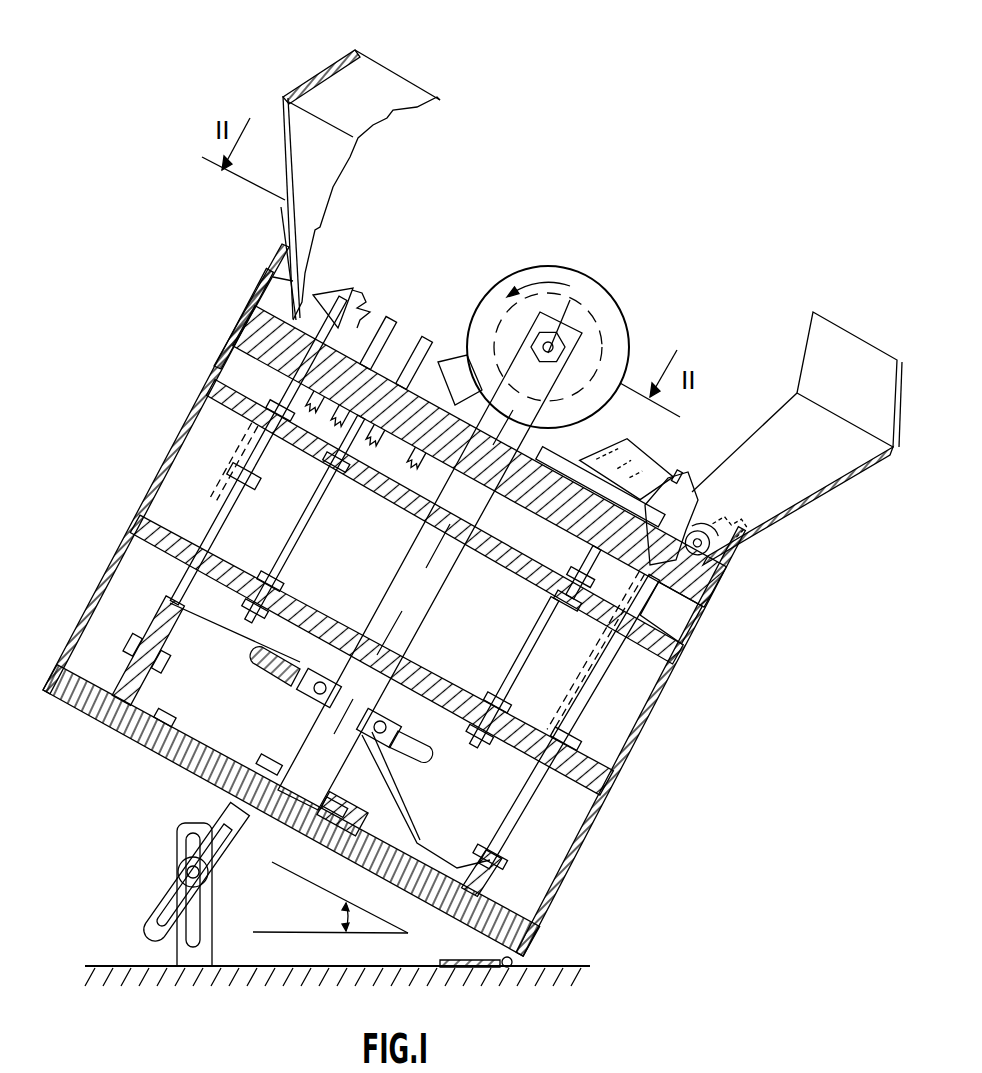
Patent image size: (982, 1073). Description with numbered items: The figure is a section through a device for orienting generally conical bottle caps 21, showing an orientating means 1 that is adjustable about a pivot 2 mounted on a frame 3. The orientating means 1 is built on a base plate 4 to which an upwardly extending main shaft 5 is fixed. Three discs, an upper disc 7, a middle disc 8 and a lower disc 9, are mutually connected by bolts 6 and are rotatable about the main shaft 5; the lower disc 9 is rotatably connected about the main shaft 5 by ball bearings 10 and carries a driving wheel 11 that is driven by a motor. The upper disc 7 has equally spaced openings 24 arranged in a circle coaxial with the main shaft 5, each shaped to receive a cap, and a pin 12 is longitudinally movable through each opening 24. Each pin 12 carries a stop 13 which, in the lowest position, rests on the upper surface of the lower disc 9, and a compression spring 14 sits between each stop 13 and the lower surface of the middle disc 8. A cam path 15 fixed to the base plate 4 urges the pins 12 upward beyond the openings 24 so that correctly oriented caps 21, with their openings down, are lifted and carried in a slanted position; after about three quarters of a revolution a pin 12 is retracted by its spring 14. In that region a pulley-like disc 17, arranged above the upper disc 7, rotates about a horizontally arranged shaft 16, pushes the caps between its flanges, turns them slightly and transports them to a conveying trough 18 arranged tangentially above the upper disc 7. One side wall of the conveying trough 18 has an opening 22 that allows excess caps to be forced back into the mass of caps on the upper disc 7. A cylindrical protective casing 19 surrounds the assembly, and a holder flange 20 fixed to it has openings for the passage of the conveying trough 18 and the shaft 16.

The orientating means 1 is at (395, 612).
The pivot 2 is at (502, 968).
The frame 3 is at (122, 966).
The base plate 4 is at (186, 770).
The main shaft 5 is at (426, 616).
The bolts 6 is at (530, 661).
The upper disc 7 is at (518, 500).
The middle disc 8 is at (587, 606).
The lower disc 9 is at (518, 752).
The ball bearings 10 is at (372, 740).
The driving wheel 11 is at (432, 758).
The pin 12 is at (226, 527).
The stop 13 is at (572, 744).
The compression spring 14 is at (590, 702).
The cam path 15 is at (398, 814).
The shaft 16 is at (558, 358).
The pulley-like disc 17 is at (616, 362).
The conveying trough 18 is at (606, 446).
The cylindrical protective casing 19 is at (588, 858).
The holder flange 20 is at (798, 506).
The caps 21 is at (352, 288).
The opening 22 is at (664, 462).
The openings 24 is at (660, 590).